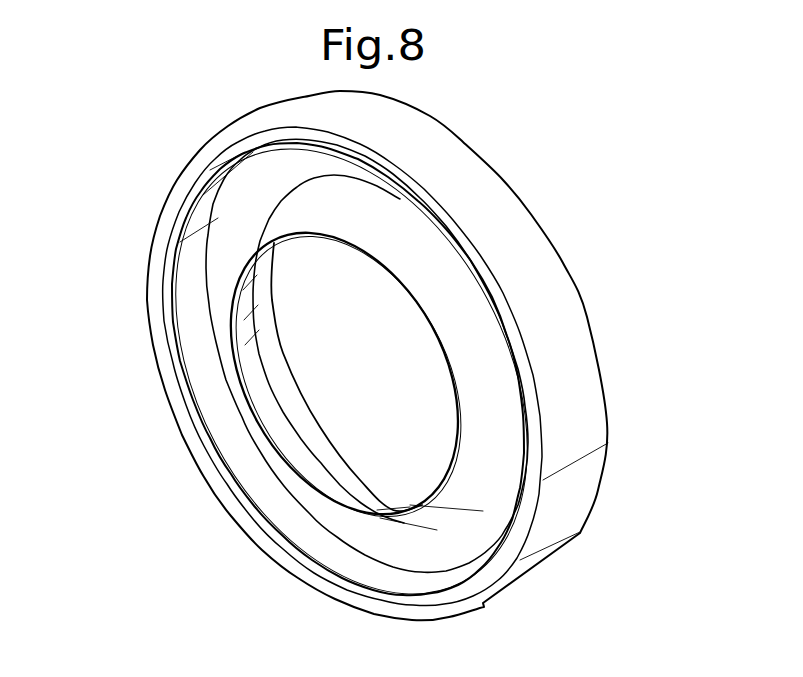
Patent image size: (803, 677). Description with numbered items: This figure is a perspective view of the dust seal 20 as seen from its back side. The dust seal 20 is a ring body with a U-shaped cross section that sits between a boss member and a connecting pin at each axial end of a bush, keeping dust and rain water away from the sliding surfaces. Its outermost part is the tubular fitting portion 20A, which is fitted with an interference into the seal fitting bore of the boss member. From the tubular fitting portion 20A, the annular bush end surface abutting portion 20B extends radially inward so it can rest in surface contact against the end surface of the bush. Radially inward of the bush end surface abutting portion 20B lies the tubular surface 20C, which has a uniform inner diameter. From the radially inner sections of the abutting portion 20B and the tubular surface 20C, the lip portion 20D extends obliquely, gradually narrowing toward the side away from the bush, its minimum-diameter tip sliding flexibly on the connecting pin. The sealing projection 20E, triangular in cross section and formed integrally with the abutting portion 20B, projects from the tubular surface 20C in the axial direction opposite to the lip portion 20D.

The dust seal 20 is at (500, 185).
The tubular fitting portion 20A is at (563, 367).
The bush end surface abutting portion 20B is at (247, 187).
The tubular surface 20C is at (322, 440).
The lip portion 20D is at (248, 412).
The sealing projection 20E is at (282, 353).